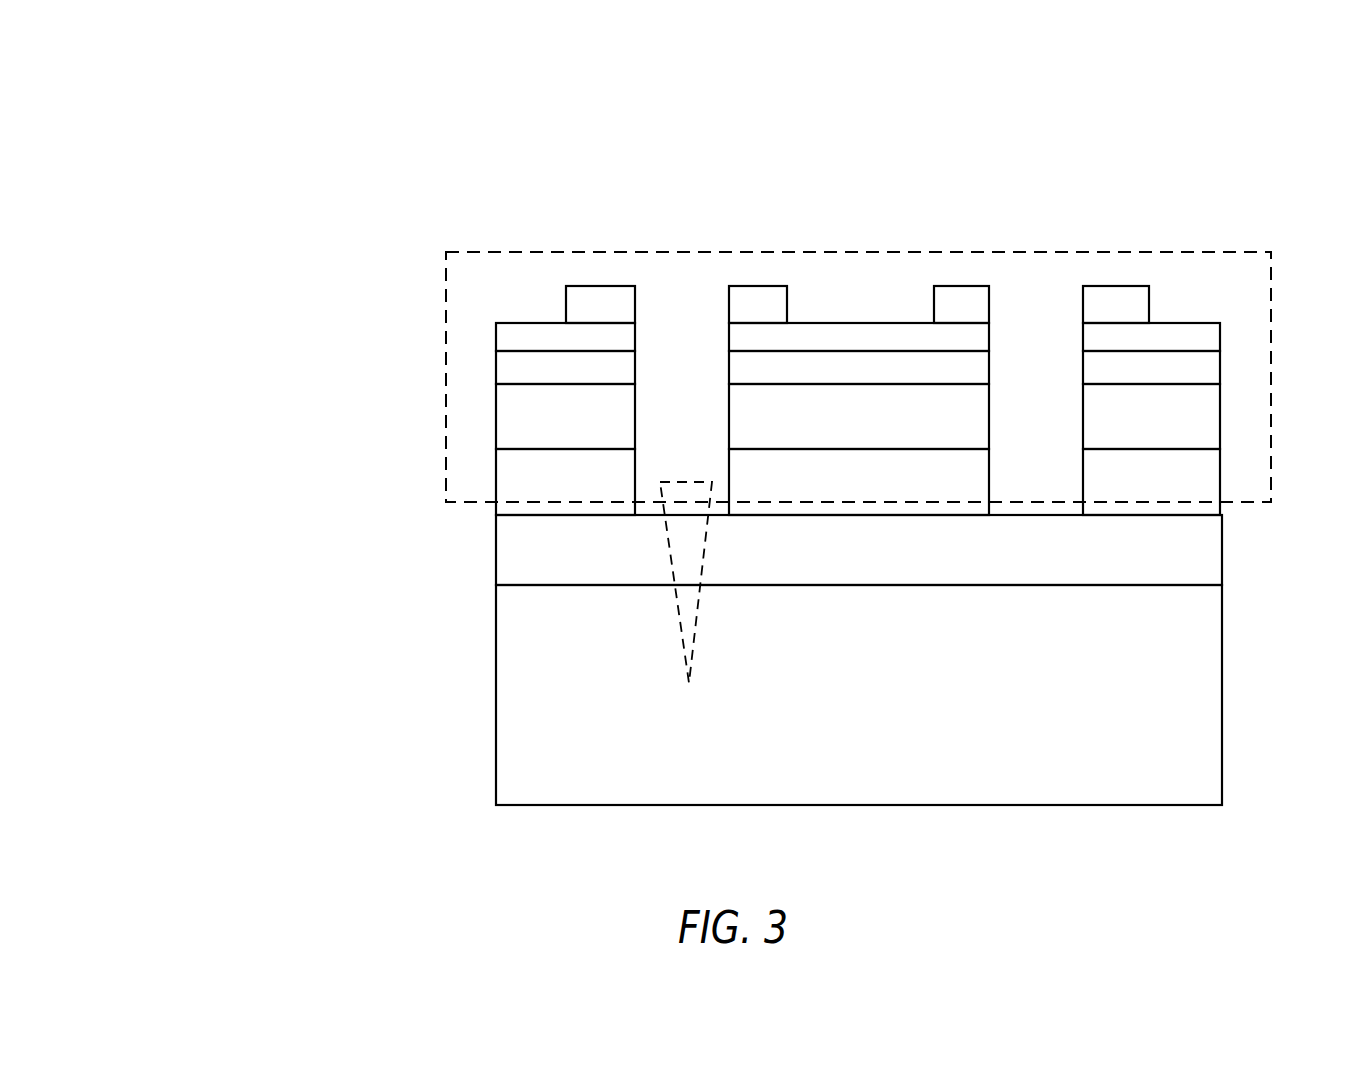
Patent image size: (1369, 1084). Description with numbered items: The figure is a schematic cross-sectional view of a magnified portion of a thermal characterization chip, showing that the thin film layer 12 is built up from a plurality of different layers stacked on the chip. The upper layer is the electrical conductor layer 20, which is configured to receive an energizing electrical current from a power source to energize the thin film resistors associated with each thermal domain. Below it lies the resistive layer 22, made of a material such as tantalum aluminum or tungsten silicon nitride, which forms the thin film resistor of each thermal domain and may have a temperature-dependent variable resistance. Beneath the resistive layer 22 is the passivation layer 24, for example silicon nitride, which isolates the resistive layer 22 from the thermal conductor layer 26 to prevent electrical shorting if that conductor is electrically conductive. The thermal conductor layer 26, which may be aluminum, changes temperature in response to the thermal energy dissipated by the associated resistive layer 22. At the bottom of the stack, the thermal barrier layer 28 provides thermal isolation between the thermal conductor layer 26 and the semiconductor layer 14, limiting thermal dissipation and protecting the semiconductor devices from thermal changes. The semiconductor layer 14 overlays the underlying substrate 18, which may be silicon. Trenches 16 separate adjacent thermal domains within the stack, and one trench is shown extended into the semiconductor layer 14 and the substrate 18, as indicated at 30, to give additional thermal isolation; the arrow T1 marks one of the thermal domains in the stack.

The thin film layer 12 is at (1271, 278).
The semiconductor layer 14 is at (1222, 560).
The trenches 16 is at (678, 365).
The substrate 18 is at (1222, 767).
The electrical conductor layer 20 is at (566, 290).
The resistive layer 22 is at (496, 326).
The passivation layer 24 is at (496, 371).
The thermal conductor layer 26 is at (496, 422).
The thermal barrier layer 28 is at (496, 490).
The extended trench 30 is at (667, 548).
The thermal path T1 is at (840, 300).